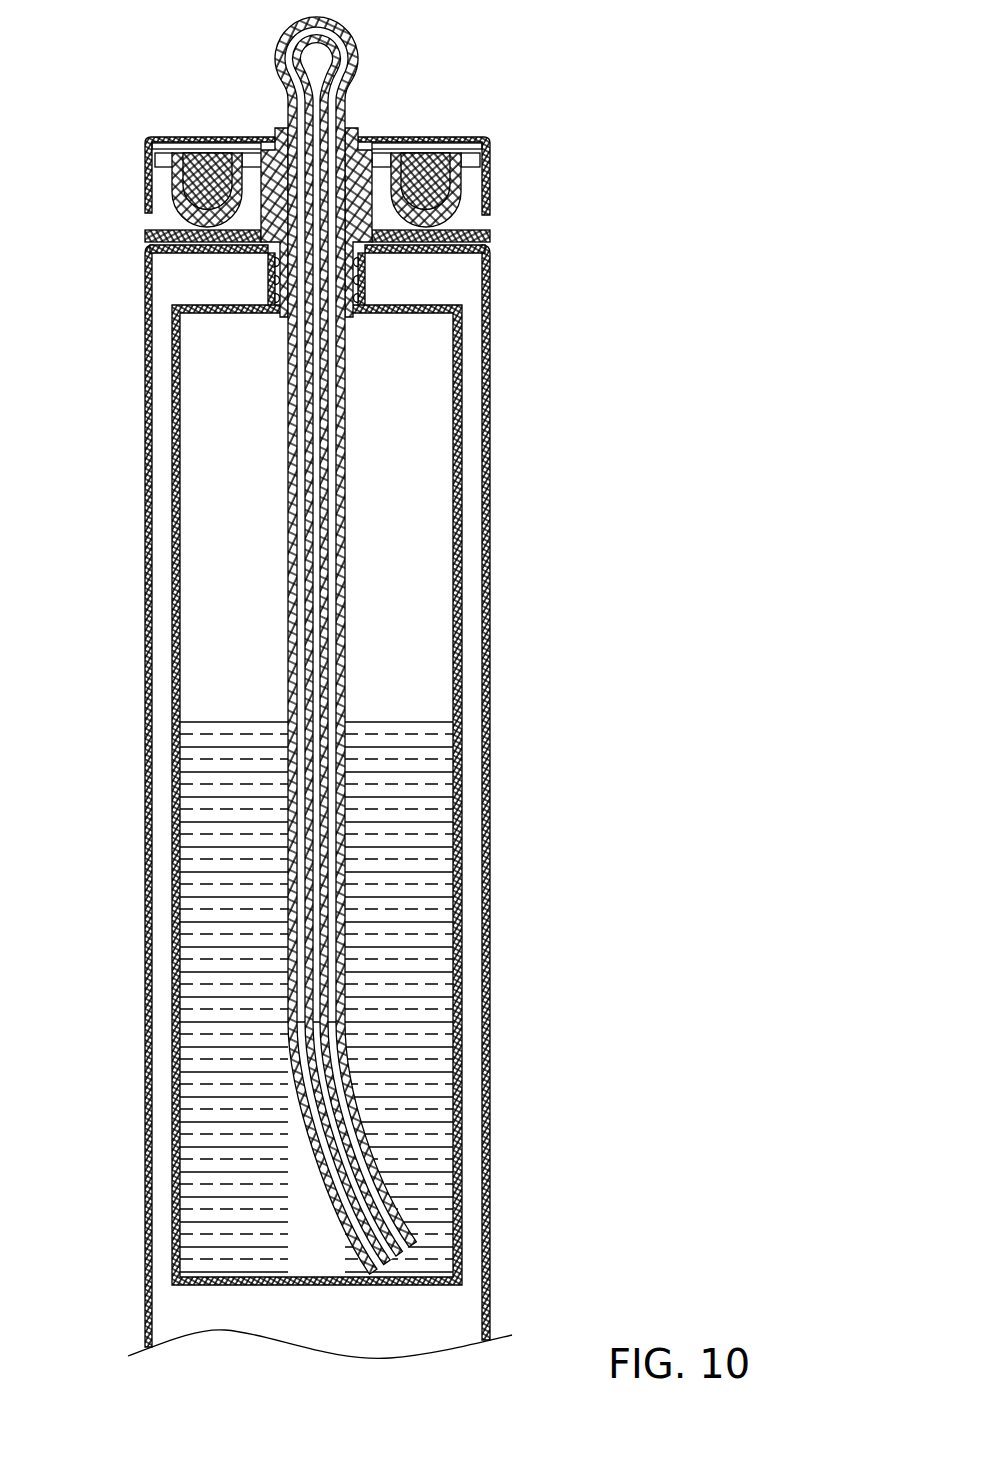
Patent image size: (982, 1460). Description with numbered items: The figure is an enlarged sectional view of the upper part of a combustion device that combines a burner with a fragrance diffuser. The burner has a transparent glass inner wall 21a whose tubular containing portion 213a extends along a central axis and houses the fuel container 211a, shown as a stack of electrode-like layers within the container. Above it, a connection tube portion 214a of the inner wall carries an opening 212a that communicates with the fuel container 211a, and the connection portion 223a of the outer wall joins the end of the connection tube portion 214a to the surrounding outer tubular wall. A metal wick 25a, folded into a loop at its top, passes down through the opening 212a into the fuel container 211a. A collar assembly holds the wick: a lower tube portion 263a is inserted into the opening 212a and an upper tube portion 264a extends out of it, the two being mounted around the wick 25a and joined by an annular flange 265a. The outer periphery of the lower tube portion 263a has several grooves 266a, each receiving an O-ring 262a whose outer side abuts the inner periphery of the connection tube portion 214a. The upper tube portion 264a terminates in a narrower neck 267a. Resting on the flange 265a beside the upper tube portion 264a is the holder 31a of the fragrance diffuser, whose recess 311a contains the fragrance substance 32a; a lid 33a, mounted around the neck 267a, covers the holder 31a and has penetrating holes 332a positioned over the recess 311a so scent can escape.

The inner wall 21a is at (323, 799).
The fuel container 211a is at (382, 795).
The opening 212a is at (288, 316).
The containing portion 213a is at (462, 762).
The connection tube portion 214a is at (463, 255).
The connection portion 223a is at (190, 248).
The wick 25a is at (345, 34).
The O-rings 262a is at (360, 298).
The lower tube portion 263a is at (350, 318).
The upper tube portion 264a is at (358, 188).
The flange 265a is at (488, 237).
The grooves 266a is at (270, 298).
The neck 267a is at (358, 132).
The holder 31a is at (259, 157).
The recess 311a is at (198, 177).
The fragrance substance 32a is at (222, 168).
The lid 33a is at (268, 145).
The penetrating holes 332a is at (185, 143).